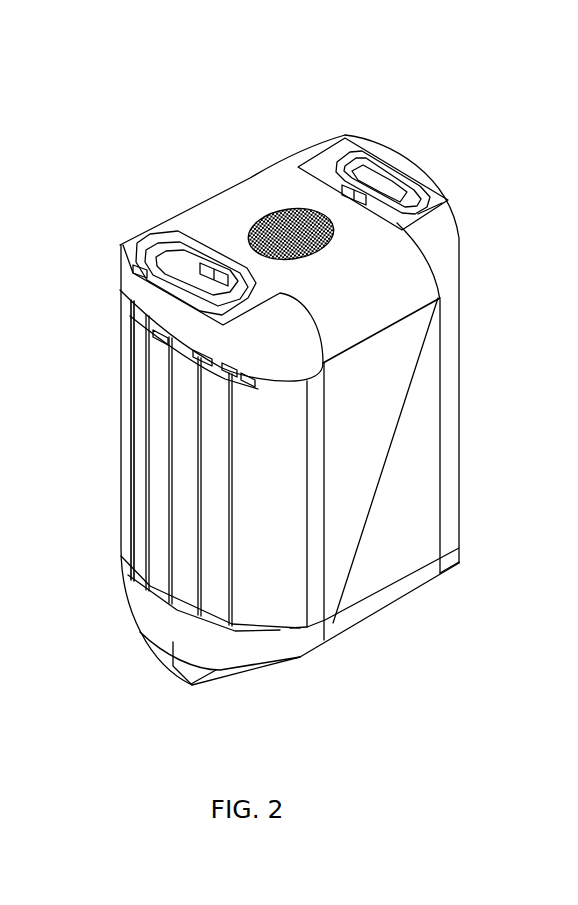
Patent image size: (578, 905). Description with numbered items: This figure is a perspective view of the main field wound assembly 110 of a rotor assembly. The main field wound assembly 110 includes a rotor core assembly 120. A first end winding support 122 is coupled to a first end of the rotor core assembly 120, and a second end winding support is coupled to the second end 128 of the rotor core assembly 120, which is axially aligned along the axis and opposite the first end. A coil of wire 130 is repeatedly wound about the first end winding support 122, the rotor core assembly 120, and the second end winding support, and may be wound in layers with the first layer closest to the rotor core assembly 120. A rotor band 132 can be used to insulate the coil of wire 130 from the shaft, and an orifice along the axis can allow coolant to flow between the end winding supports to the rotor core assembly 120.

The main field wound assembly 110 is at (498, 124).
The rotor core assembly 120 is at (130, 432).
The first end winding support 122 is at (137, 245).
The second end 128 is at (155, 607).
The coil of wire 130 is at (292, 218).
The rotor band 132 is at (237, 186).